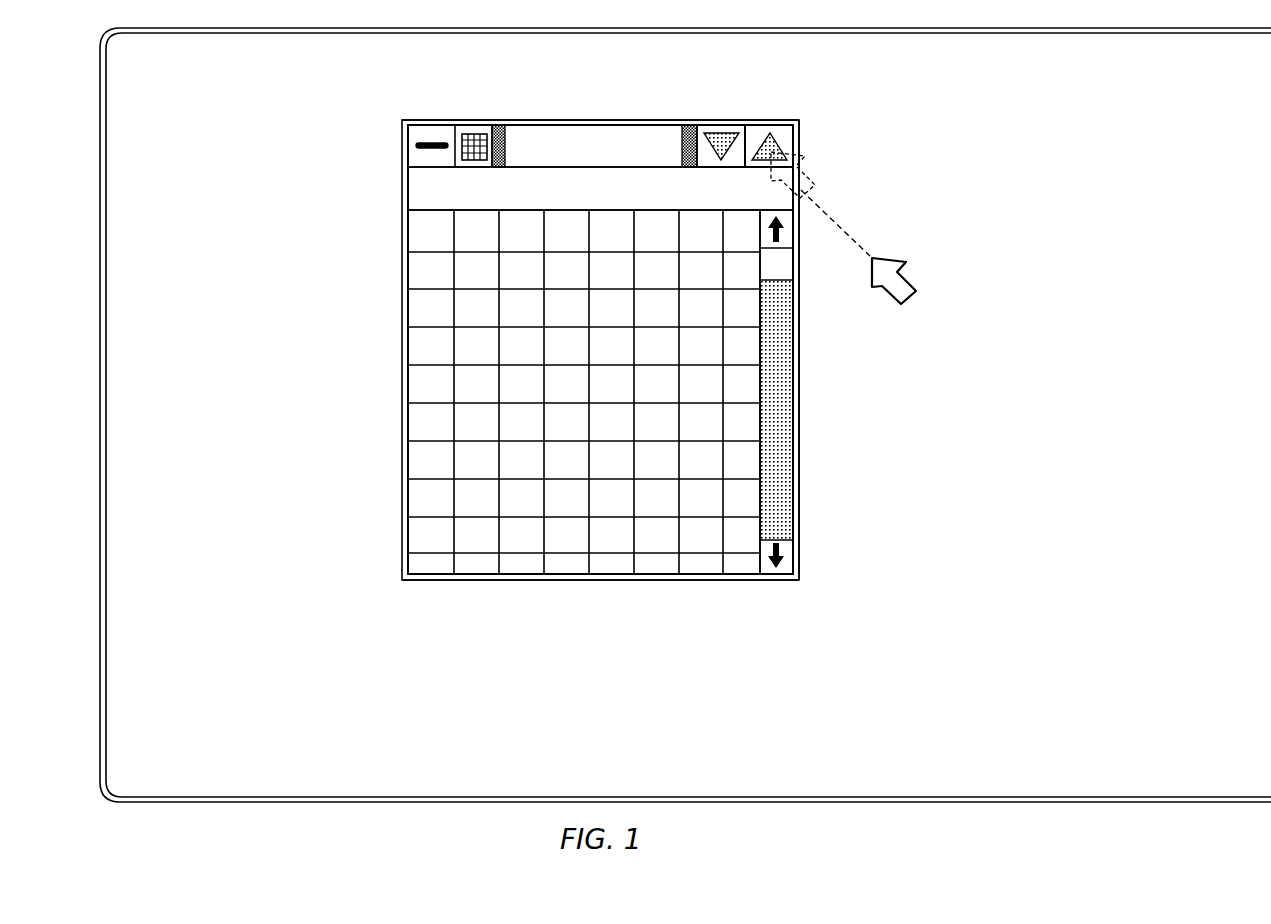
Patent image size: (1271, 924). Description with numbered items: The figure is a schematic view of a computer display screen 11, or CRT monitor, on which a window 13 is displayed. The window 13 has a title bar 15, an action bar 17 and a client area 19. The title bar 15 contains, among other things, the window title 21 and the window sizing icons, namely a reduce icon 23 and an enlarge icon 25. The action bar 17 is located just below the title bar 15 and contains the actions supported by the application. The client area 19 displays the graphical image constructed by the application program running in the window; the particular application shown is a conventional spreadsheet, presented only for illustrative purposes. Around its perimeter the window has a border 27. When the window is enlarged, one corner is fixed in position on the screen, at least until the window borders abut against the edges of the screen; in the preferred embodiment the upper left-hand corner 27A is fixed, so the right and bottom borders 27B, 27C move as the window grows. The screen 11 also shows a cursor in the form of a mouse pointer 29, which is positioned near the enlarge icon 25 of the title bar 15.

The computer display screen 11 is at (104, 172).
The window 13 is at (404, 275).
The title bar 15 is at (662, 137).
The action bar 17 is at (416, 177).
The client area 19 is at (478, 458).
The window title 21 is at (572, 135).
The reduce icon 23 is at (722, 136).
The enlarge icon 25 is at (773, 140).
The border 27 is at (800, 446).
The upper left-hand corner 27A is at (402, 125).
The right border 27B is at (800, 383).
The bottom border 27C is at (695, 580).
The mouse pointer 29 is at (915, 272).